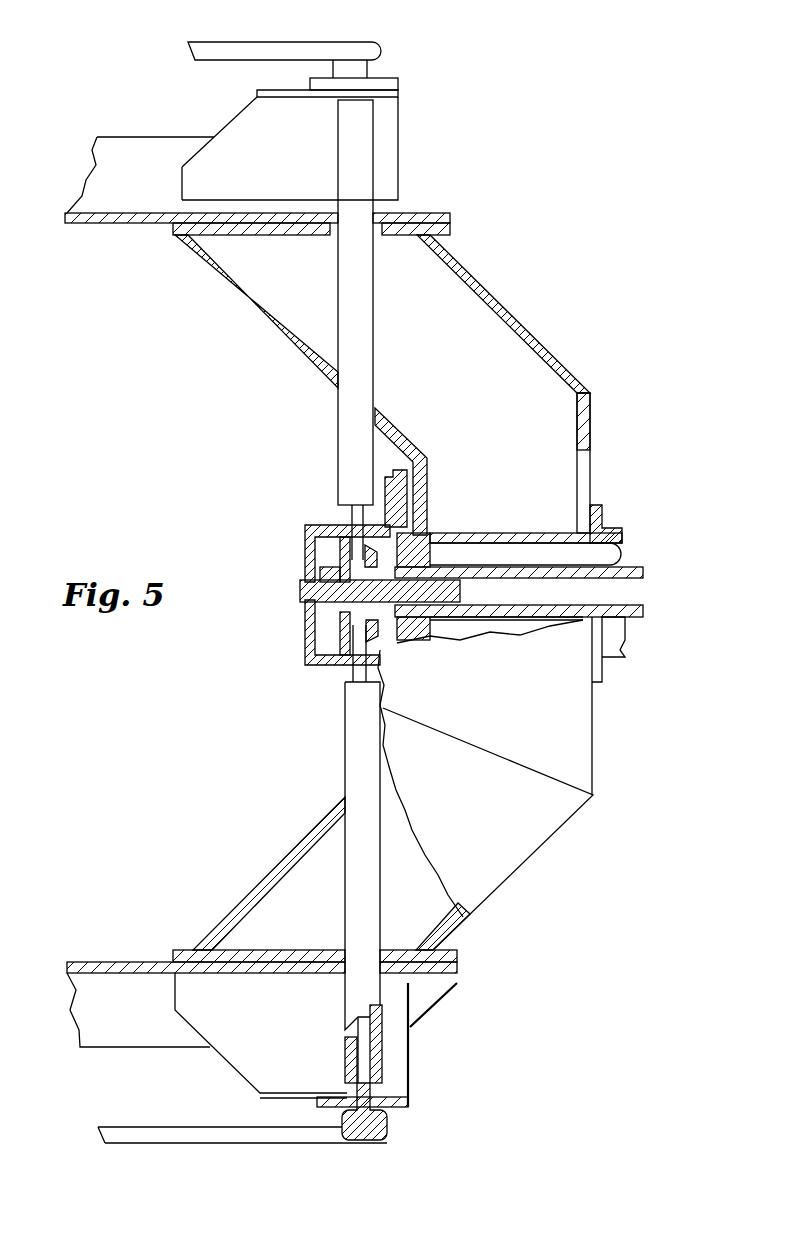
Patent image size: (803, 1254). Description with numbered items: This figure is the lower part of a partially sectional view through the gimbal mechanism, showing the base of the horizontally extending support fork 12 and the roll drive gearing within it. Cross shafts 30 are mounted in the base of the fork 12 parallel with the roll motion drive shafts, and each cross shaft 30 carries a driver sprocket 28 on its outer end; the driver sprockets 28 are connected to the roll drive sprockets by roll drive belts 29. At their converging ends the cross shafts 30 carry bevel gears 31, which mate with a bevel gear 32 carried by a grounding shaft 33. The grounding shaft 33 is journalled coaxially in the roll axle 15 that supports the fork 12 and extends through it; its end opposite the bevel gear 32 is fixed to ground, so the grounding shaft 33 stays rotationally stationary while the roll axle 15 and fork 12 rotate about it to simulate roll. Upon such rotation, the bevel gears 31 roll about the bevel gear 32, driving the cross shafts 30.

The support fork 12 is at (152, 135).
The roll axle 15 is at (618, 662).
The driver sprocket 28 is at (377, 46).
The roll drive belt 29 is at (247, 41).
The cross shaft 30 is at (374, 305).
The bevel gear 31 is at (320, 545).
The bevel gear 32 is at (336, 562).
The grounding shaft 33 is at (626, 567).